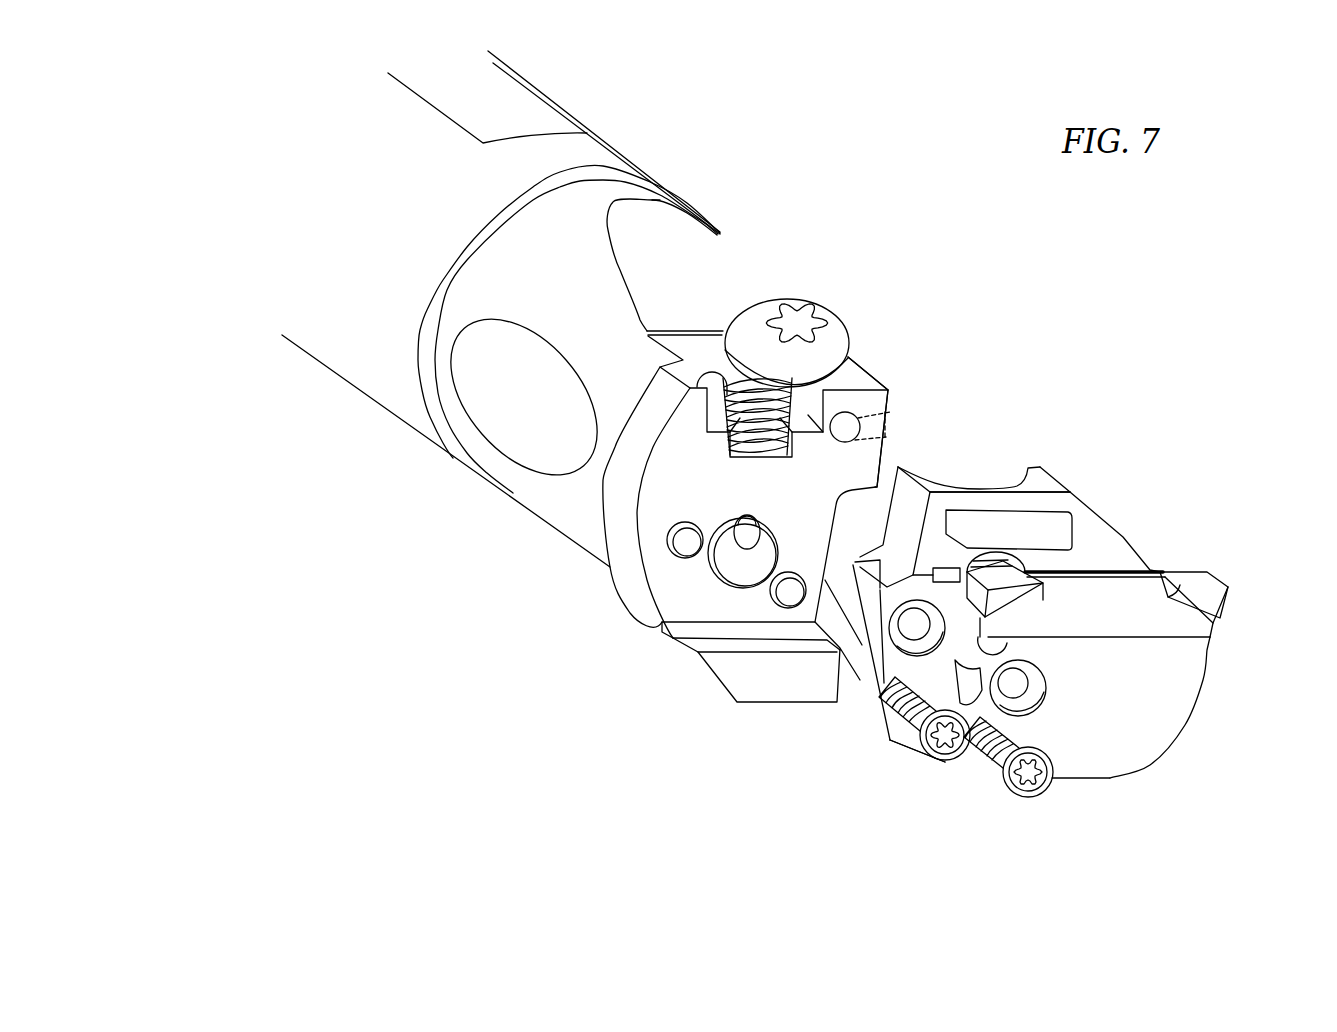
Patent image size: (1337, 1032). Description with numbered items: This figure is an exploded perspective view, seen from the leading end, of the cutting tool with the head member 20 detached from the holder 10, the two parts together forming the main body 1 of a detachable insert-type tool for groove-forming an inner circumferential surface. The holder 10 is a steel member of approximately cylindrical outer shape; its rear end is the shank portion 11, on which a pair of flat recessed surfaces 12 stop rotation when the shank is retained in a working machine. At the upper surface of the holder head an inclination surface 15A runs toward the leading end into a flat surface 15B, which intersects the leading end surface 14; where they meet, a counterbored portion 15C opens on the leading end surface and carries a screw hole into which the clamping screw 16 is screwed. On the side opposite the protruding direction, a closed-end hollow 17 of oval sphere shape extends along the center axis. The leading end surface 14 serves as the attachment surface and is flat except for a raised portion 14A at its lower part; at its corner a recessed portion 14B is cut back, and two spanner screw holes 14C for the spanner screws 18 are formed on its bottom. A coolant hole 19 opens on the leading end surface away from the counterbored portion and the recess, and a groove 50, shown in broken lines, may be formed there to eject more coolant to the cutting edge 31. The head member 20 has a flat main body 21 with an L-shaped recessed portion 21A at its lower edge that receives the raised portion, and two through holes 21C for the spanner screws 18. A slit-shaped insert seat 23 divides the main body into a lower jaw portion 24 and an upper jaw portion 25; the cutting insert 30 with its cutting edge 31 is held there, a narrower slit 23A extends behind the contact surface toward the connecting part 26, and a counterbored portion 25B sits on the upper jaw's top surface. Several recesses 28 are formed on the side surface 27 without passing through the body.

The main body 1 is at (667, 95).
The holder 10 is at (713, 185).
The shank portion 11 is at (380, 378).
The flat recessed surfaces 12 is at (537, 110).
The leading end surface 14 is at (877, 408).
The raised portion 14A is at (770, 683).
The recessed portion 14B is at (852, 515).
The spanner screw holes 14C is at (790, 586).
The inclination surface 15A is at (718, 255).
The flat surface 15B is at (852, 373).
The counterbored portion 15C is at (718, 382).
The clamping screw 16 is at (803, 313).
The closed-end hollow 17 is at (530, 428).
The spanner screws 18 is at (942, 753).
The coolant hole 19 is at (845, 417).
The head member 20 is at (1126, 469).
The main body 21 is at (1088, 763).
The L-shaped recessed portion 21A is at (958, 763).
The through holes 21C is at (895, 650).
The insert seat 23 is at (1152, 652).
The slit 23A is at (927, 582).
The lower jaw portion 24 is at (1140, 733).
The upper jaw portion 25 is at (1130, 537).
The counterbored portion 25B is at (993, 468).
The connecting part 26 is at (925, 575).
The side surface 27 is at (1058, 725).
The recesses 28 is at (1045, 527).
The cutting insert 30 is at (1222, 547).
The cutting edge 31 is at (1217, 575).
The groove 50 is at (890, 417).